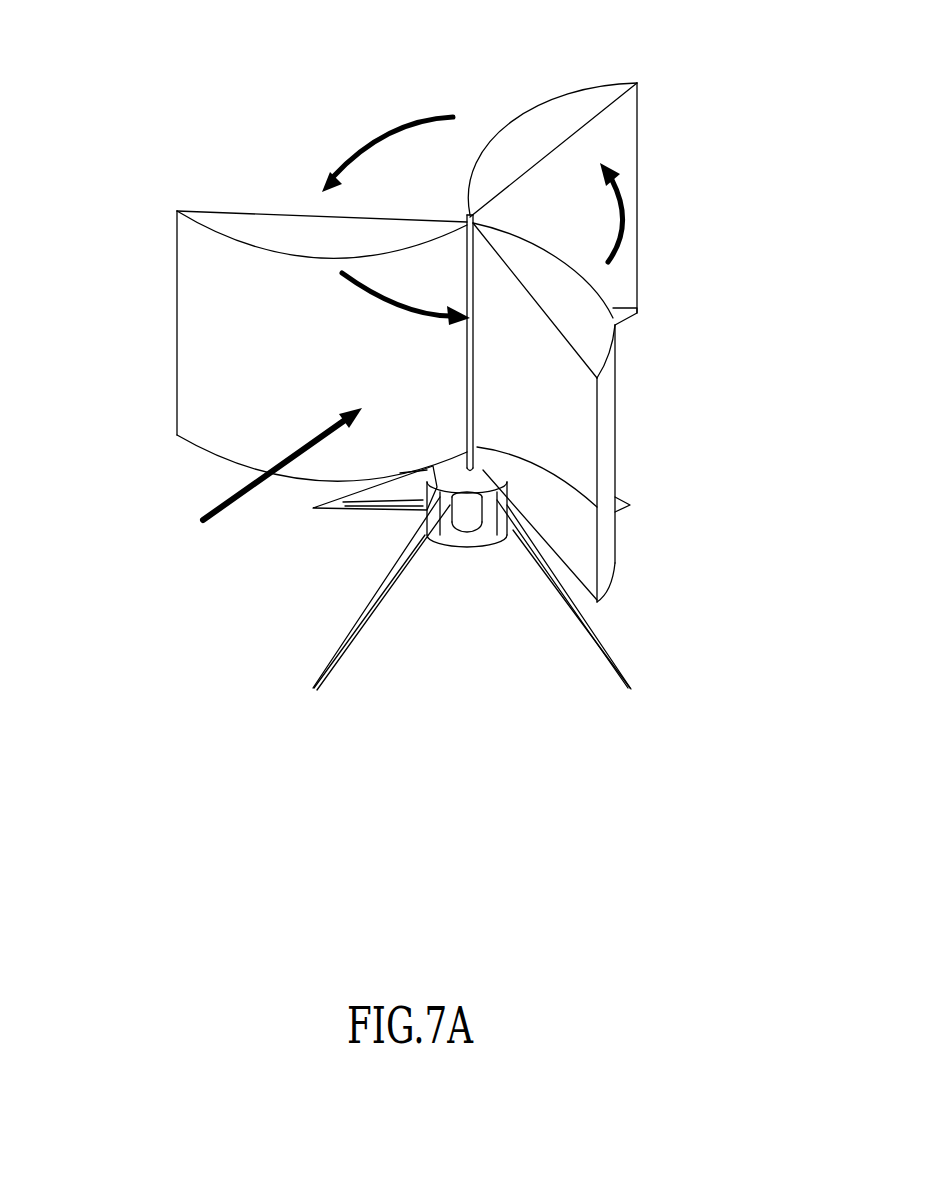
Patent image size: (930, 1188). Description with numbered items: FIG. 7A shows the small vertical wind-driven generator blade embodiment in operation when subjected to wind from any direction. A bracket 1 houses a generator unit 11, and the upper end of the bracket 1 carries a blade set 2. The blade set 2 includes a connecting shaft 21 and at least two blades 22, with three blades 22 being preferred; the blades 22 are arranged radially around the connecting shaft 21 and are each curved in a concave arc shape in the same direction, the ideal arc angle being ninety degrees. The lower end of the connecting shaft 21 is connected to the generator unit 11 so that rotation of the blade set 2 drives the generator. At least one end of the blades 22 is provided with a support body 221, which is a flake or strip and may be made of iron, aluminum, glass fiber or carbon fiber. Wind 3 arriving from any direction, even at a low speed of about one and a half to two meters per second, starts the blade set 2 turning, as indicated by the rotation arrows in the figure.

The bracket 1 is at (305, 646).
The generator unit 11 is at (473, 518).
The blade set 2 is at (305, 100).
The connecting shaft 21 is at (423, 505).
The blade 22 is at (218, 365).
The support body 221 is at (372, 232).
The wind 3 is at (223, 513).